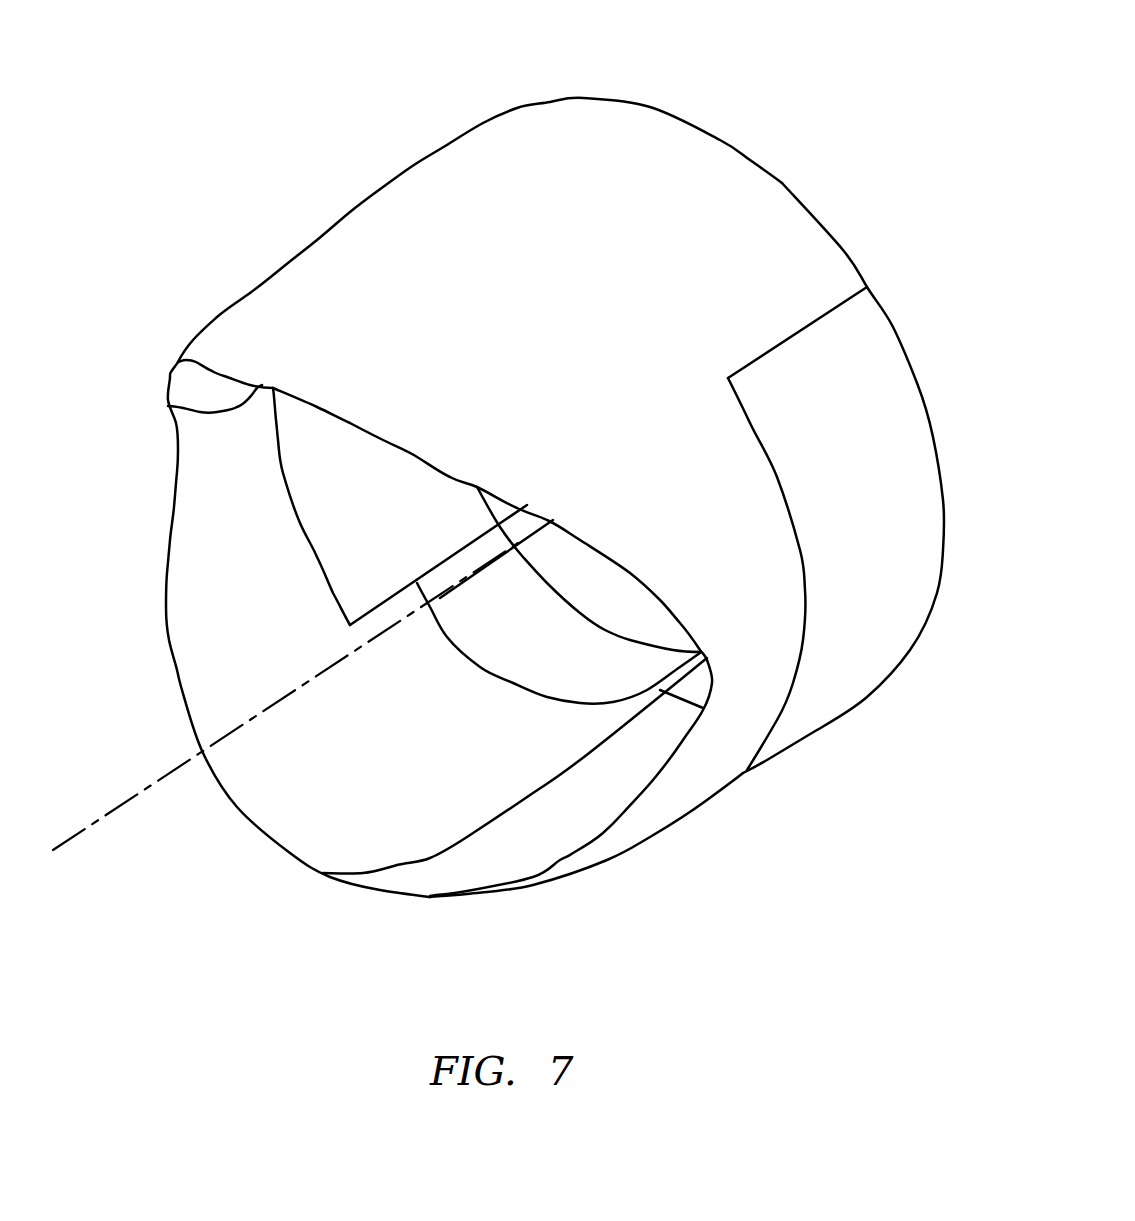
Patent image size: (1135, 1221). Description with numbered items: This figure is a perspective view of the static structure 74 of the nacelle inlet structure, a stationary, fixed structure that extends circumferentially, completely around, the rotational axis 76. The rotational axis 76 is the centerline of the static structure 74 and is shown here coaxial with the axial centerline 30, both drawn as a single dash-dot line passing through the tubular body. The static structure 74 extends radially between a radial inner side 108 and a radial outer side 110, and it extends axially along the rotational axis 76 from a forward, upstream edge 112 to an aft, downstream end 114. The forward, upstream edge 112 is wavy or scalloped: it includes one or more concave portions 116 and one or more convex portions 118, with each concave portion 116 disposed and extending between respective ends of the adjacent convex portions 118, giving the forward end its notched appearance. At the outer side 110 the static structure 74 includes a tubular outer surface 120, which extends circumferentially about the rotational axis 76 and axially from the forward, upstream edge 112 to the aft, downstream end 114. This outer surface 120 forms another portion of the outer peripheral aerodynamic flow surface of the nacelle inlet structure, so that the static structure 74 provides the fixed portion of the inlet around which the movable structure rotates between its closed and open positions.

The static structure 74 is at (498, 484).
The radial inner side 108 is at (437, 825).
The radial outer side 110 is at (703, 803).
The forward, upstream edge 112 is at (165, 580).
The aft, downstream end 114 is at (782, 183).
The concave portion 116 is at (173, 472).
The convex portion 118 is at (170, 405).
The outer surface 120 is at (380, 232).
The axial centerline 30 is at (285, 732).
The rotational axis 76 is at (83, 830).